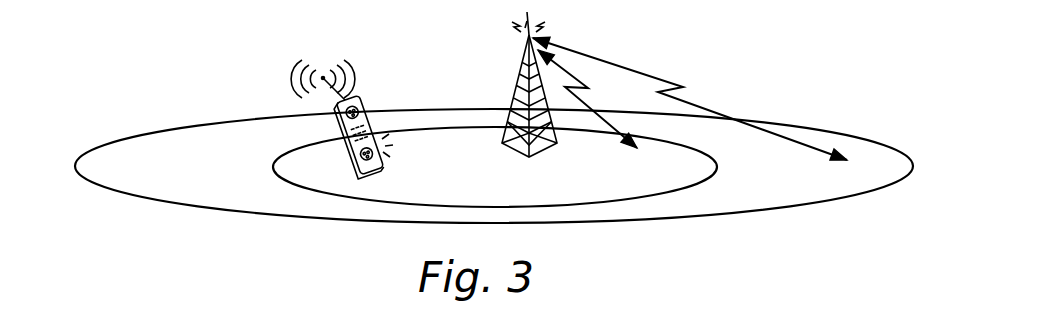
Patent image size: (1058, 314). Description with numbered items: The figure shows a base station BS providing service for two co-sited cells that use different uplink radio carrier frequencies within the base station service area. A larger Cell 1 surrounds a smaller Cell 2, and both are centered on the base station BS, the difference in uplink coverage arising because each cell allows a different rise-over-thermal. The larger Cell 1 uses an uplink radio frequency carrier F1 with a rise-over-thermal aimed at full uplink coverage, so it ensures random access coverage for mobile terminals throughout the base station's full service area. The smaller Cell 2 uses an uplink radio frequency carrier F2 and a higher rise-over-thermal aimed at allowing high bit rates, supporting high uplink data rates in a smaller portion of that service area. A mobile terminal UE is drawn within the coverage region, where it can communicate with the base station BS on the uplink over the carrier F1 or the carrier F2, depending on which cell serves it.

The base station BS is at (519, 71).
The mobile terminal UE is at (357, 172).
The uplink radio frequency carrier F1 is at (703, 106).
The uplink radio frequency carrier F2 is at (594, 111).
The cell 1 Cell 1 is at (494, 166).
The cell 2 Cell 2 is at (495, 167).